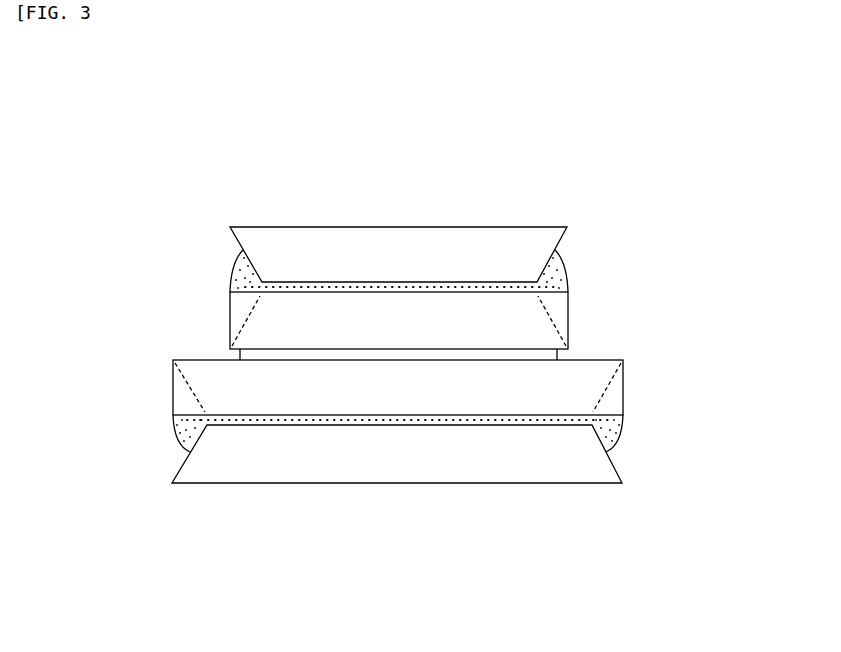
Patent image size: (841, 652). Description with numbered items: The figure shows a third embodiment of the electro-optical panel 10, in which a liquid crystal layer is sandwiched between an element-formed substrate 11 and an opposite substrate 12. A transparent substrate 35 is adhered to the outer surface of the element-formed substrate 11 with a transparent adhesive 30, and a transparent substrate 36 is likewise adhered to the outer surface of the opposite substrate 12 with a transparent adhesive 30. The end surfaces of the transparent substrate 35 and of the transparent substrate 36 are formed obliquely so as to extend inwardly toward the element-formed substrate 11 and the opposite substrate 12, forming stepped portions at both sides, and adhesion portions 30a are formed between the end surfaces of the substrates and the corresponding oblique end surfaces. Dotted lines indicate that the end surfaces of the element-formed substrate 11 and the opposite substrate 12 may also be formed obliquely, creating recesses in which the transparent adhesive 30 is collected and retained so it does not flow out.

The electro-optical panel 10 is at (157, 350).
The element-formed substrate 11 is at (627, 372).
The opposite substrate 12 is at (570, 330).
The transparent adhesive 30 is at (457, 282).
The adhesion portions 30a is at (242, 283).
The transparent substrate 35 is at (327, 485).
The transparent substrate 36 is at (318, 226).